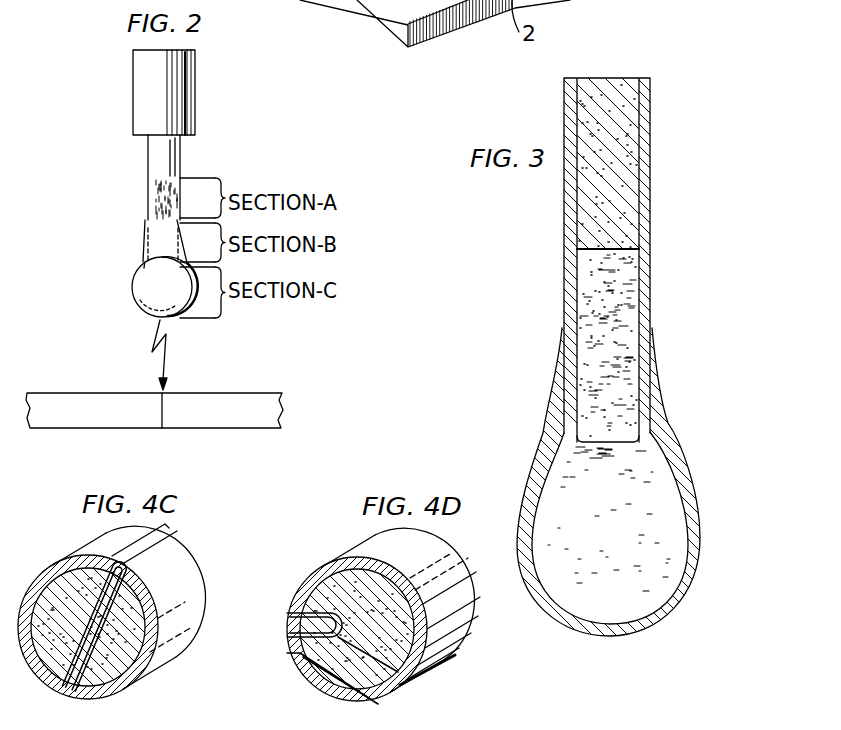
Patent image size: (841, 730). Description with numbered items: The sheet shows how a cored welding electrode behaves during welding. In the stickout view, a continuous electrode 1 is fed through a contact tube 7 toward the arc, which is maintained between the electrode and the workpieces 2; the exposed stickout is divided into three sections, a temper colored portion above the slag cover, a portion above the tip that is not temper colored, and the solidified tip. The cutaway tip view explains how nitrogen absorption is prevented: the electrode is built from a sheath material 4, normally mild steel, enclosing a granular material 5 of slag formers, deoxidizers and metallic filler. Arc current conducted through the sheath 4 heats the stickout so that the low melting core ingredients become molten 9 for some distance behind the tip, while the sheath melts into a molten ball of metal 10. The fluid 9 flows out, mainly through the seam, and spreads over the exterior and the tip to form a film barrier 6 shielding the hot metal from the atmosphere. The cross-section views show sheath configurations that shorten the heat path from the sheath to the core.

In FIG. 2, the continuous electrode 1 is at (157, 155).
In FIG. 2, the workpieces 2 is at (75, 393).
In FIG. 3, the sheath material 4 is at (651, 127).
In FIG. 3, the granular material 5 is at (622, 185).
In FIG. 3, the film barrier 6 is at (685, 500).
In FIG. 2, the contact tube 7 is at (182, 102).
In FIG. 3, the molten core material 9 is at (620, 318).
In FIG. 3, the molten ball of metal 10 is at (667, 557).